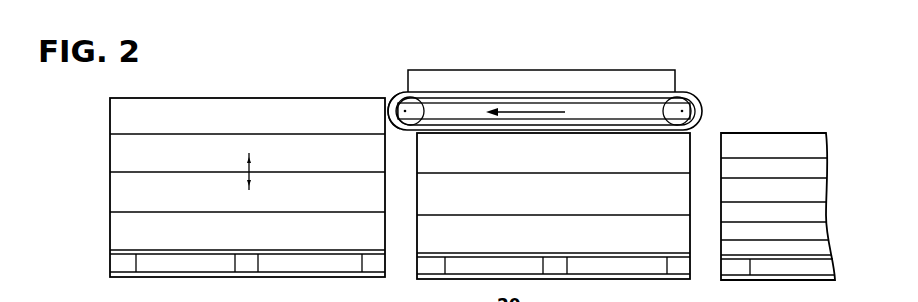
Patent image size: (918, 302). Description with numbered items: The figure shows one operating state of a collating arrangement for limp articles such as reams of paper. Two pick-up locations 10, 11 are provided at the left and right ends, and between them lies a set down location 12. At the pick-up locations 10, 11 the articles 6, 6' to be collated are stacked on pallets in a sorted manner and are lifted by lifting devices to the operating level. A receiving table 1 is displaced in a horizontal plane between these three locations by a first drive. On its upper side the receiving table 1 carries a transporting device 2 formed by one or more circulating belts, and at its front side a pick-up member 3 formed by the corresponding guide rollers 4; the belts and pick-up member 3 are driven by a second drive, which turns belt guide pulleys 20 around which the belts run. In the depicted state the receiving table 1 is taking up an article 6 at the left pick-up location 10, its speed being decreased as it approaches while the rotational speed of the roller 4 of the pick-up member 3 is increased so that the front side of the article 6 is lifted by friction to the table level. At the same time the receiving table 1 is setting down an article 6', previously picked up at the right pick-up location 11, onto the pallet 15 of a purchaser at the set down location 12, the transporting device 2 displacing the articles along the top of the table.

The receiving table 1 is at (637, 108).
The transporting device 2 is at (413, 98).
The pick-up member 3 is at (395, 99).
The guide roller 4 is at (387, 106).
The article 6 is at (247, 119).
The article 6' is at (784, 127).
The pick-up location 10 is at (196, 92).
The pick-up location 11 is at (769, 124).
The set down location 12 is at (544, 56).
The pallet 15 is at (623, 279).
The belt guide pulley 20 is at (580, 92).